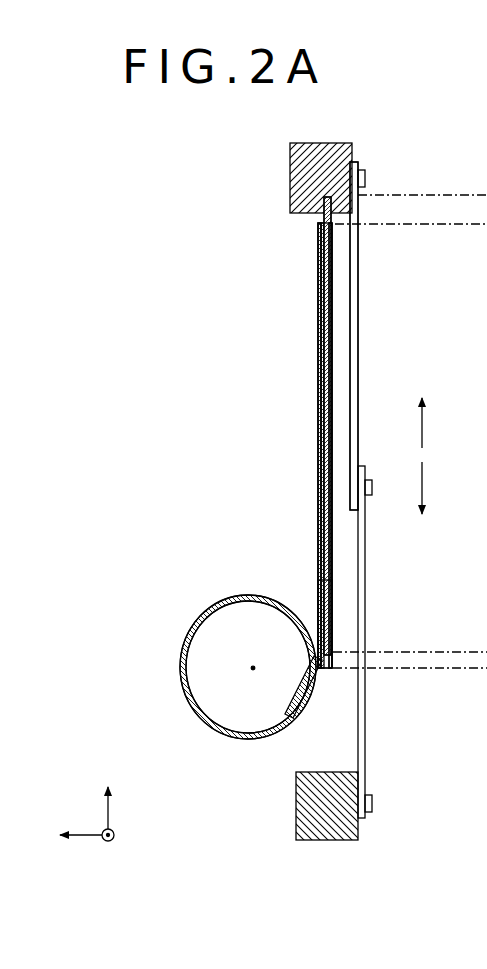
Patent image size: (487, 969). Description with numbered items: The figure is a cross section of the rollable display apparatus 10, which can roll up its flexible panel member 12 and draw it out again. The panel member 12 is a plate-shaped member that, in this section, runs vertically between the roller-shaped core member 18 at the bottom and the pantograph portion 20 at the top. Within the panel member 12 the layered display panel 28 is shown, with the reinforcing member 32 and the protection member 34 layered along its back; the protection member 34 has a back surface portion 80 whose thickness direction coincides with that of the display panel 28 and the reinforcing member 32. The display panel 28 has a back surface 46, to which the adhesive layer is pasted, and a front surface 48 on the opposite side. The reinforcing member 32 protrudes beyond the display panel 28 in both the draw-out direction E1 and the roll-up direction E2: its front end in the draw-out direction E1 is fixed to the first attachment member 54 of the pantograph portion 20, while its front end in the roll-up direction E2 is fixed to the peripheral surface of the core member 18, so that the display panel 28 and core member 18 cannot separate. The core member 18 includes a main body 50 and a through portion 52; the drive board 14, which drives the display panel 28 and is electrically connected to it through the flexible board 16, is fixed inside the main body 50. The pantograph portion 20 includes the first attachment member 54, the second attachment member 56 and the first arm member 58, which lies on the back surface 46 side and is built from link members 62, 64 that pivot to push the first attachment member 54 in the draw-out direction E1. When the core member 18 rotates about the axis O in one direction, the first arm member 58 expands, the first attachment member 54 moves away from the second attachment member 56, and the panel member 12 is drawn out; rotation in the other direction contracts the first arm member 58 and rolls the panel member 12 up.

The display apparatus 10 is at (203, 227).
The panel member 12 is at (316, 345).
The drive board 14 is at (303, 712).
The flexible board 16 is at (317, 600).
The core member 18 is at (181, 667).
The pantograph portion 20 is at (379, 167).
The display panel 28 is at (322, 375).
The reinforcing member 32 is at (332, 409).
The protection member 34 is at (336, 340).
The back surface 46 is at (332, 444).
The front surface 48 is at (322, 441).
The main body 50 is at (187, 700).
The through portion 52 is at (310, 640).
The first attachment member 54 is at (306, 180).
The second attachment member 56 is at (300, 806).
The first arm member 58 is at (364, 311).
The link member 62 is at (359, 268).
The link member 64 is at (366, 633).
The back surface portion 80 is at (332, 375).
The draw-out direction E1 is at (424, 427).
The roll-up direction E2 is at (424, 487).
The axis O is at (251, 670).